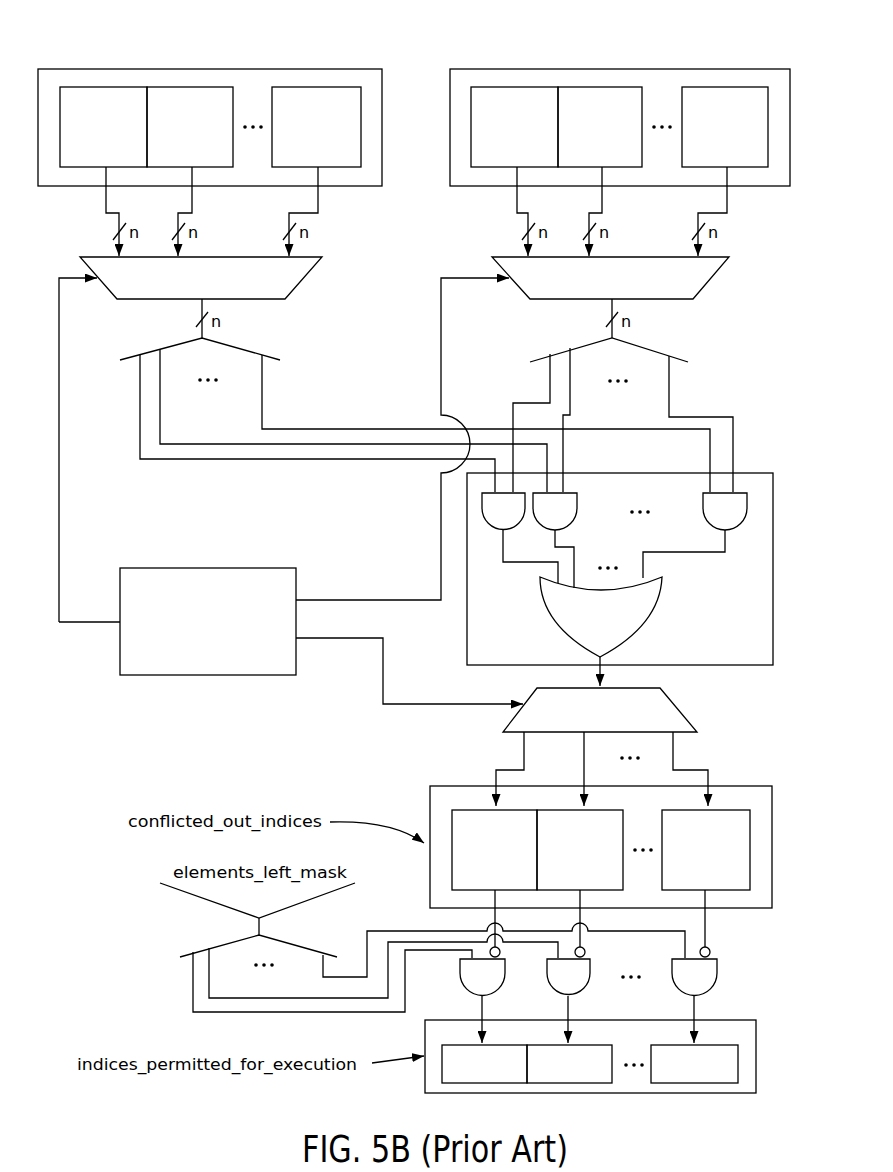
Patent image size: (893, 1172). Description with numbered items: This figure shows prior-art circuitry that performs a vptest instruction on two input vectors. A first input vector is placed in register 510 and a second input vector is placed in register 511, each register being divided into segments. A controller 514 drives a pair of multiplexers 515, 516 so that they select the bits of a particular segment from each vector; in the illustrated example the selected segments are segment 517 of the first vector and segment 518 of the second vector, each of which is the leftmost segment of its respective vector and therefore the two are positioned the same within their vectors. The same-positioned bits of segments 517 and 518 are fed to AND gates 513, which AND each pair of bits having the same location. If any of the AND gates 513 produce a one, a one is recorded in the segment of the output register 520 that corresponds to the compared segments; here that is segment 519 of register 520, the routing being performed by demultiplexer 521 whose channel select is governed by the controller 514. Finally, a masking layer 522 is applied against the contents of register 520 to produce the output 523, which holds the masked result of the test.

The register 510 is at (210, 110).
The register 511 is at (620, 110).
The AND gates 513 is at (752, 508).
The controller 514 is at (190, 648).
The multiplexer 515 is at (305, 281).
The multiplexer 516 is at (712, 281).
The segment 517 is at (89, 138).
The segment 518 is at (498, 138).
The segment 519 is at (477, 861).
The register 520 is at (615, 832).
The demultiplexer 521 is at (683, 711).
The masking layer 522 is at (735, 971).
The output 523 is at (725, 1020).